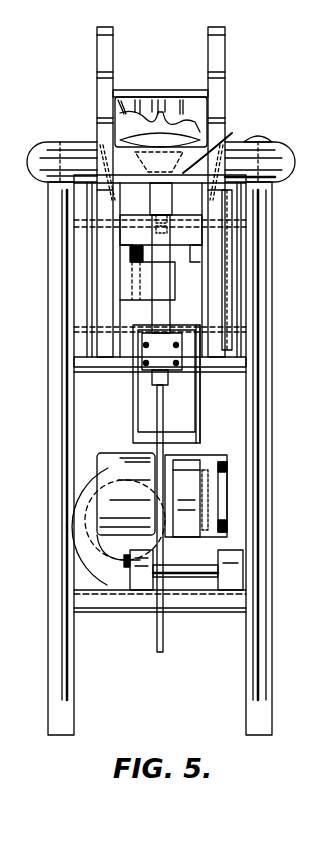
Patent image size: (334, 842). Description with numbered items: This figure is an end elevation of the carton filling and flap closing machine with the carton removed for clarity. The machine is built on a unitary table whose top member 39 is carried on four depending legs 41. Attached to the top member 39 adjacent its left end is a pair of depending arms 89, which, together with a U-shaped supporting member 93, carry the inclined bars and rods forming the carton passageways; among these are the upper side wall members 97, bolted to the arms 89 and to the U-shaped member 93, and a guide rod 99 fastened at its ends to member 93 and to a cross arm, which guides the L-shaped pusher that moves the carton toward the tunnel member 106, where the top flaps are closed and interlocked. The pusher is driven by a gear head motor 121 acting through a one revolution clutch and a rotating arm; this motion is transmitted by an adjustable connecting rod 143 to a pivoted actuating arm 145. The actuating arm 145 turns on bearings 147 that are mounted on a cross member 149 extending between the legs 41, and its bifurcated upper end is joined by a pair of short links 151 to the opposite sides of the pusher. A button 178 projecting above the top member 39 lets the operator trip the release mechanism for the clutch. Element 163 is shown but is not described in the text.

The top member 39 is at (60, 145).
The legs 41 is at (62, 687).
The depending arms 89 is at (225, 268).
The U-shaped supporting member 93 is at (177, 160).
The side wall members 97 is at (212, 45).
The guide rod 99 is at (162, 275).
The tunnel member 106 is at (158, 95).
The gear head motor 121 is at (115, 455).
The adjustable connecting rod 143 is at (225, 498).
The actuating arm 145 is at (163, 632).
The bearings 147 is at (232, 572).
The cross member 149 is at (222, 603).
The short links 151 is at (190, 402).
The guide rail 163 is at (200, 410).
The button 178 is at (262, 139).